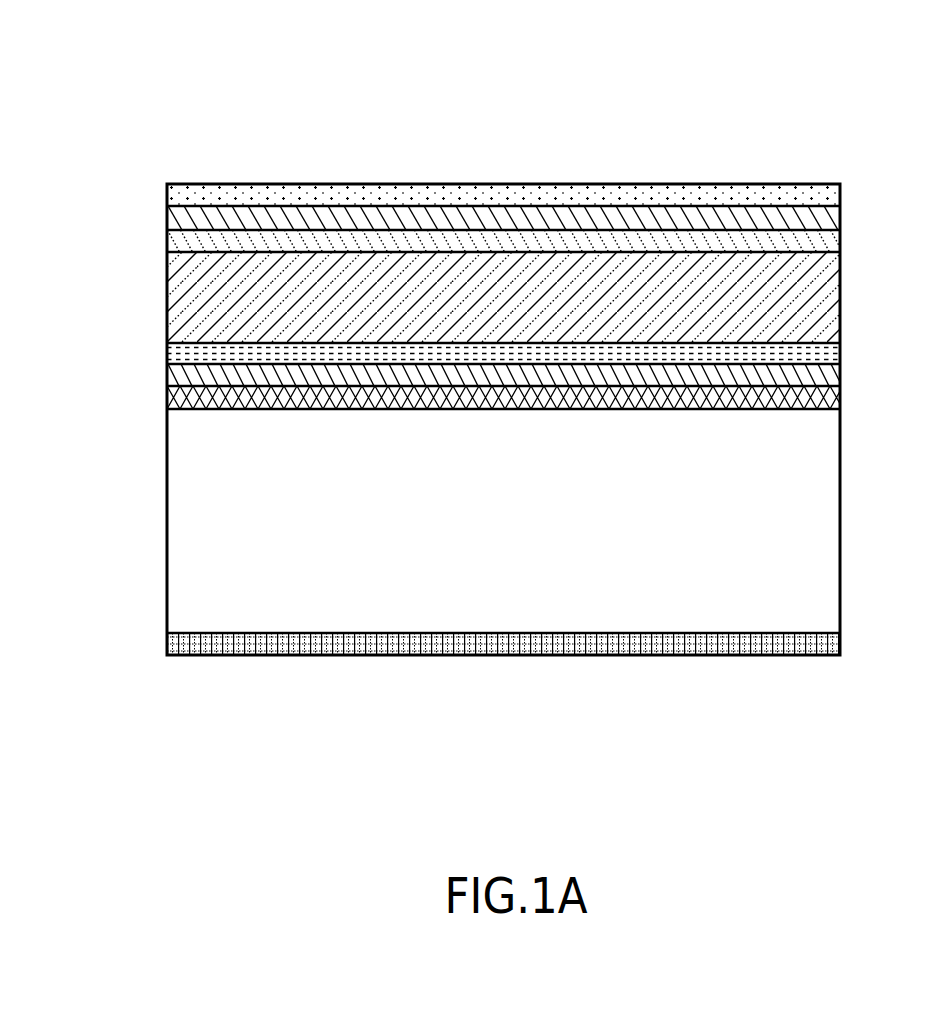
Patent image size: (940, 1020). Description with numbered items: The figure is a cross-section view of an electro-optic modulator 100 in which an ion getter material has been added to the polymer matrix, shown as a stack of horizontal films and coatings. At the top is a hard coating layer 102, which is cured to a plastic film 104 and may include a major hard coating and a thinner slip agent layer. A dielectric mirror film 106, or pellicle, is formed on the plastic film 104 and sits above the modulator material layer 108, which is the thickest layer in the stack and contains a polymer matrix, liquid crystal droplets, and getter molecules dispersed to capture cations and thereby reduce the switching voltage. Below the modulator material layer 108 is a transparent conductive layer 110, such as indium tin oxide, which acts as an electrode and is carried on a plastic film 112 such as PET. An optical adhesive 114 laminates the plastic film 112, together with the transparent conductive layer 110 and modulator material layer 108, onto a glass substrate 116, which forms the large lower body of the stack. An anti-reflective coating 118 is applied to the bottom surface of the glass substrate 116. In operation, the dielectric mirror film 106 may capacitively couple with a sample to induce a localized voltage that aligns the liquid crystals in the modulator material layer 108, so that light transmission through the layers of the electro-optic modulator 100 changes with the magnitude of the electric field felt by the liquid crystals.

The electro-optic modulator 100 is at (163, 38).
The hard coating layer 102 is at (167, 193).
The plastic film 104 is at (840, 217).
The dielectric mirror film 106 is at (167, 241).
The modulator material layer 108 is at (840, 297).
The transparent conductive layer 110 is at (167, 353).
The plastic film 112 is at (840, 376).
The optical adhesive 114 is at (167, 398).
The glass substrate 116 is at (840, 521).
The anti-reflective coating 118 is at (167, 643).